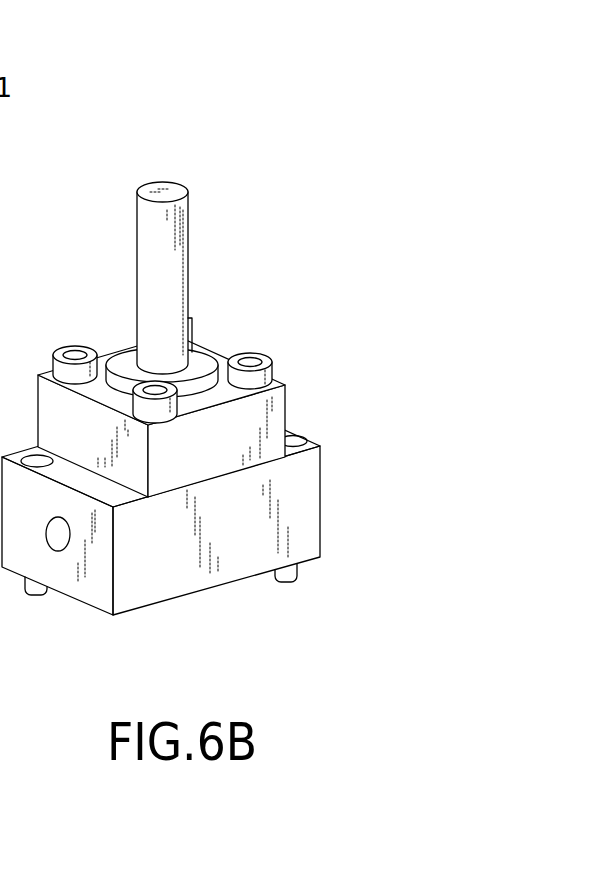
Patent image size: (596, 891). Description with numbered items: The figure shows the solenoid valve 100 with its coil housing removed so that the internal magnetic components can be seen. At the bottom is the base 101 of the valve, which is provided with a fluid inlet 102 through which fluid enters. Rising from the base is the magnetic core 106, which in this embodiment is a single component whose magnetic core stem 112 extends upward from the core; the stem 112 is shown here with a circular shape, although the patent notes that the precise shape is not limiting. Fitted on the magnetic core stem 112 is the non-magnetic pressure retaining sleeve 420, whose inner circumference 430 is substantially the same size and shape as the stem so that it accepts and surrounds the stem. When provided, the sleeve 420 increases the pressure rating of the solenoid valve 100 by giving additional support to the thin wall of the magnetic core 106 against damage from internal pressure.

The solenoid valve 100 is at (201, 335).
The base 101 is at (322, 470).
The fluid inlet 102 is at (63, 537).
The magnetic core 106 is at (213, 257).
The magnetic core stem 112 is at (188, 262).
The non-magnetic pressure retaining sleeve 420 is at (174, 318).
The inner circumference 430 is at (216, 357).